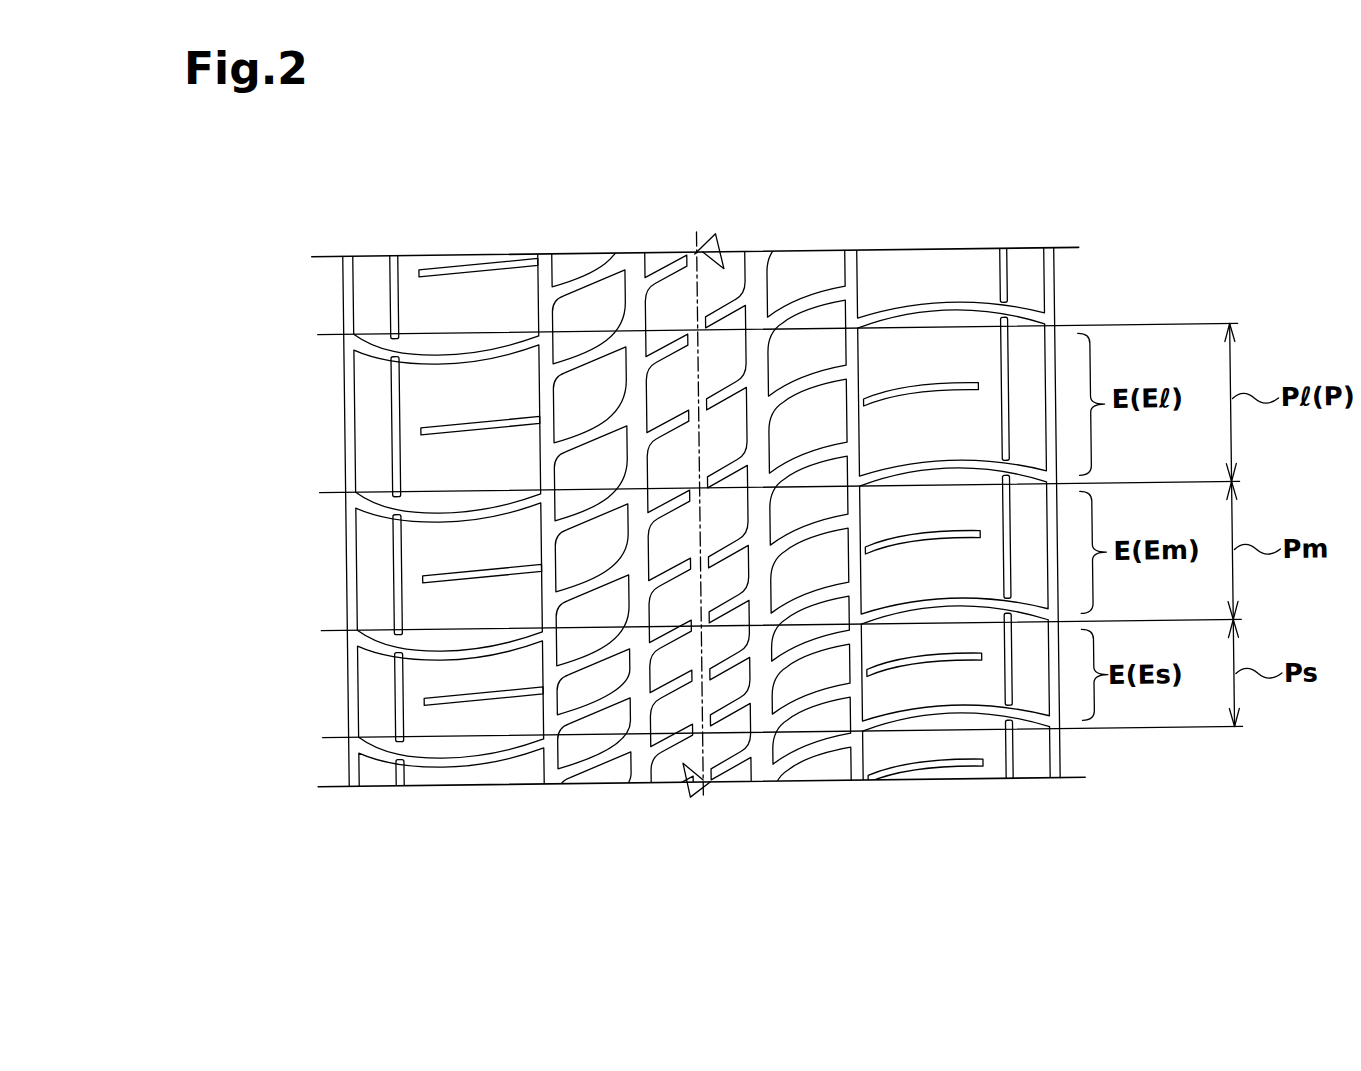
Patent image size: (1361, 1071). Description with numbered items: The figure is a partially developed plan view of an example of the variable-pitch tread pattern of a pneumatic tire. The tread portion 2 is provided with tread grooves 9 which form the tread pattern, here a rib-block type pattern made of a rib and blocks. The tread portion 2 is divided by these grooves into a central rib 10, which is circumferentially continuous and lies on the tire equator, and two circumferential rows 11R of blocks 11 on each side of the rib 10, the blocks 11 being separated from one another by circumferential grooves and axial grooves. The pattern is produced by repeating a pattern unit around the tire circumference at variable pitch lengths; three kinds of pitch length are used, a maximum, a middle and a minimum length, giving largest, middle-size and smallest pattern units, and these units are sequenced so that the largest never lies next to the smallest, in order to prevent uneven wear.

The tread portion 2 is at (1102, 234).
The tread grooves 9 is at (494, 751).
The central rib 10 is at (714, 229).
The blocks 11 is at (465, 774).
The circumferential rows of blocks 11R is at (480, 240).